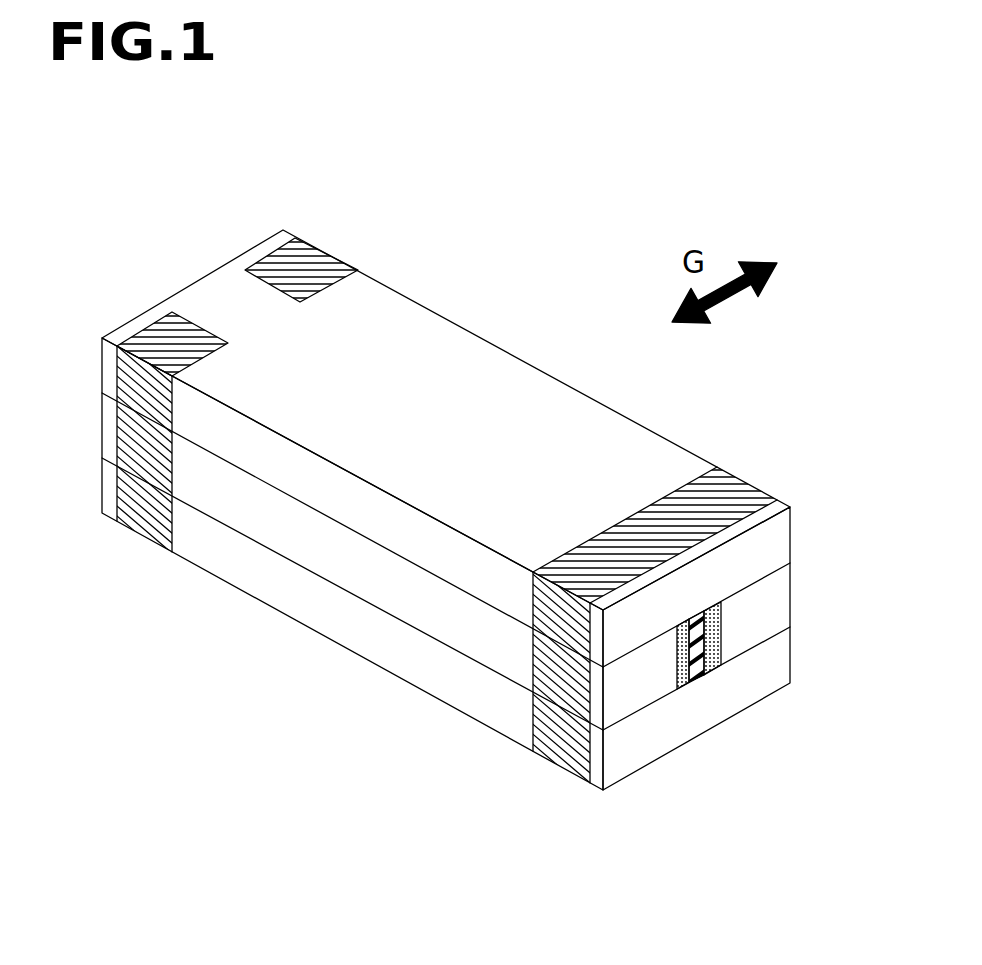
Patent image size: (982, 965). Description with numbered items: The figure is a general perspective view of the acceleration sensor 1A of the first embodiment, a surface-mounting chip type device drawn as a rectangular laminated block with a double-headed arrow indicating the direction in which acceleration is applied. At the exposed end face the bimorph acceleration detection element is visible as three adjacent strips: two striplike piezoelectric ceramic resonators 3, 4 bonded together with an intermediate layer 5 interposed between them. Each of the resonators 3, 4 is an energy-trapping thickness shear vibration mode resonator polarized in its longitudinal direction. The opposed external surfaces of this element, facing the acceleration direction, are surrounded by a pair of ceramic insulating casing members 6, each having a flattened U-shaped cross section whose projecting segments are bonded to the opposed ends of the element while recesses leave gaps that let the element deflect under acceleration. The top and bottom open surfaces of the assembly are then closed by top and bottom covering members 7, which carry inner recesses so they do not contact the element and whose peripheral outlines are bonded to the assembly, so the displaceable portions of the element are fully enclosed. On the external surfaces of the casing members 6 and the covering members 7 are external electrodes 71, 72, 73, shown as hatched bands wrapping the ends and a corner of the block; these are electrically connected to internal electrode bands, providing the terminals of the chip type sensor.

The acceleration sensor 1A is at (160, 250).
The piezoelectric ceramic resonator 3 is at (720, 650).
The piezoelectric ceramic resonator 4 is at (663, 680).
The intermediate layer 5 is at (690, 680).
The casing member 6 is at (783, 603).
The covering member 7 is at (462, 343).
The external electrode 71 is at (733, 497).
The external electrode 72 is at (327, 258).
The external electrode 73 is at (147, 537).